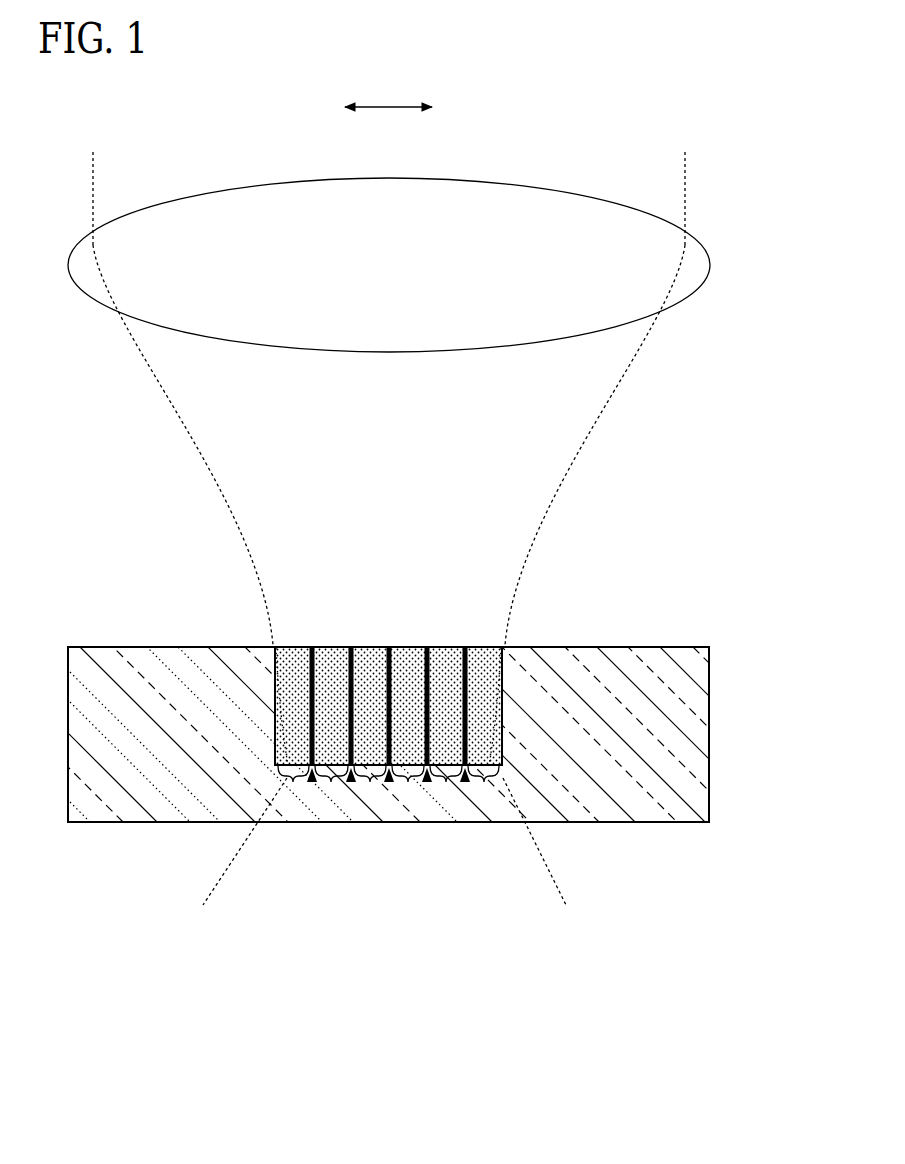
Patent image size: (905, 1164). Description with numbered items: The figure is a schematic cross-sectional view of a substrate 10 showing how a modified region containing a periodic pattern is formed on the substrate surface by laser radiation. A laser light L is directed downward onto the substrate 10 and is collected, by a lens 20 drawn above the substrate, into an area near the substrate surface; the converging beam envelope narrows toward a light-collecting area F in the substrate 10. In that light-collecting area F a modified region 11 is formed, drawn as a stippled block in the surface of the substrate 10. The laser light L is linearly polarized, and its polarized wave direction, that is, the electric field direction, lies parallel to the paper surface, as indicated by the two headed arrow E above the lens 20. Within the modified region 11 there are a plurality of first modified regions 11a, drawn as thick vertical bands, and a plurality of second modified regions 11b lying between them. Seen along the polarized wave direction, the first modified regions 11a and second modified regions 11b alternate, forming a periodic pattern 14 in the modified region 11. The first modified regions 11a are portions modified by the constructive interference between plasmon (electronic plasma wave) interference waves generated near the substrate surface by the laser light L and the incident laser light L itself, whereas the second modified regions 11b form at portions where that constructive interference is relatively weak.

The lens 20 is at (565, 218).
The substrate 10 is at (690, 737).
The modified region 11 is at (500, 641).
The first modified regions 11a is at (510, 908).
The second modified regions 11b is at (268, 841).
The periodic pattern 14 is at (537, 937).
The two headed arrow E is at (388, 120).
The light-collecting area F is at (328, 568).
The laser light L is at (558, 497).